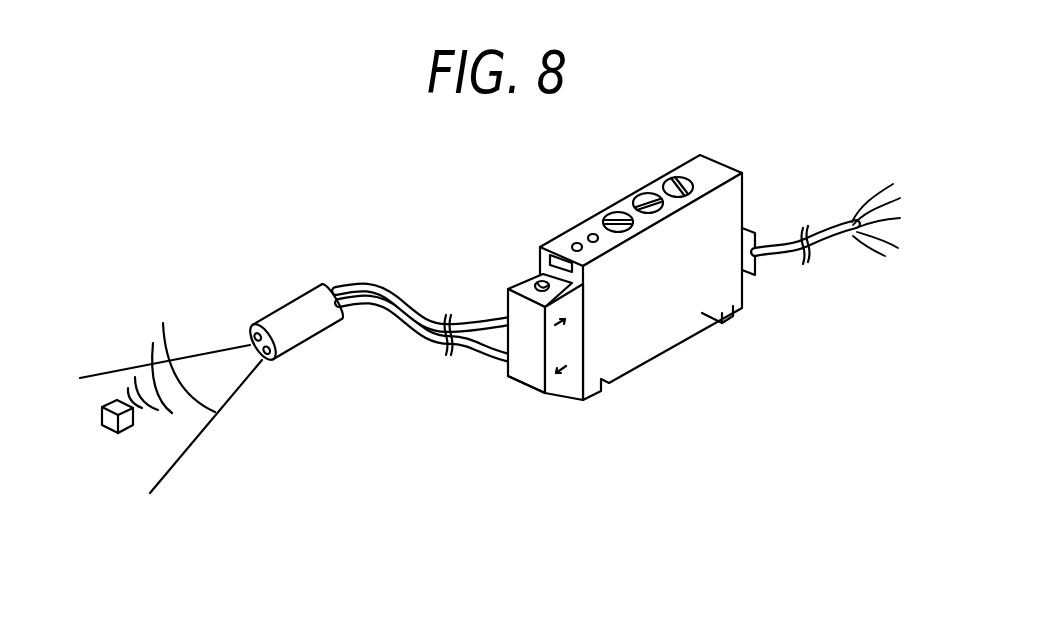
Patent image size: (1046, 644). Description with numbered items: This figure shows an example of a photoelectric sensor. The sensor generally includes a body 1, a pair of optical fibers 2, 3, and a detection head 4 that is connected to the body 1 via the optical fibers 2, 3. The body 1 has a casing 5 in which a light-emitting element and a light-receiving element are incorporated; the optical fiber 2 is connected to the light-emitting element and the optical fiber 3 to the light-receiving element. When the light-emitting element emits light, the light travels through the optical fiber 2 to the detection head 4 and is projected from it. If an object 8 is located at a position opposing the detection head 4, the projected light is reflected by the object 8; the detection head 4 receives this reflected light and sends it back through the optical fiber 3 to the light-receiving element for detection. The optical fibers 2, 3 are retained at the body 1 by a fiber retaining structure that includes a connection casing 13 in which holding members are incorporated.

The body 1 is at (668, 335).
The optical fiber 2 is at (402, 334).
The optical fiber 3 is at (410, 304).
The detection head 4 is at (300, 293).
The casing 5 is at (620, 346).
The object 8 is at (110, 432).
The connection casing 13 is at (538, 386).